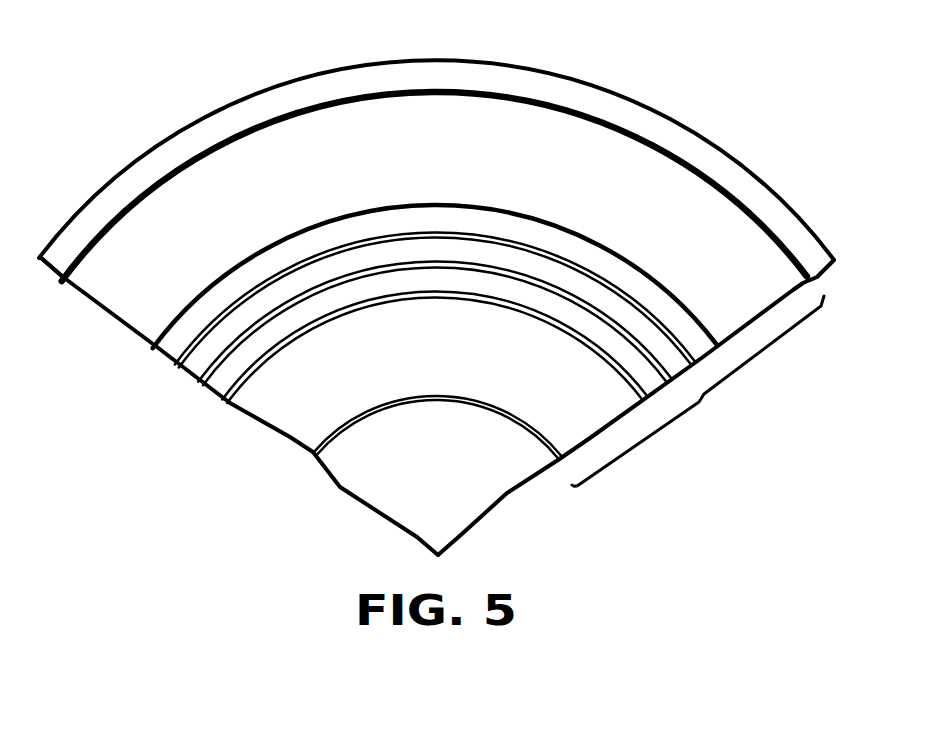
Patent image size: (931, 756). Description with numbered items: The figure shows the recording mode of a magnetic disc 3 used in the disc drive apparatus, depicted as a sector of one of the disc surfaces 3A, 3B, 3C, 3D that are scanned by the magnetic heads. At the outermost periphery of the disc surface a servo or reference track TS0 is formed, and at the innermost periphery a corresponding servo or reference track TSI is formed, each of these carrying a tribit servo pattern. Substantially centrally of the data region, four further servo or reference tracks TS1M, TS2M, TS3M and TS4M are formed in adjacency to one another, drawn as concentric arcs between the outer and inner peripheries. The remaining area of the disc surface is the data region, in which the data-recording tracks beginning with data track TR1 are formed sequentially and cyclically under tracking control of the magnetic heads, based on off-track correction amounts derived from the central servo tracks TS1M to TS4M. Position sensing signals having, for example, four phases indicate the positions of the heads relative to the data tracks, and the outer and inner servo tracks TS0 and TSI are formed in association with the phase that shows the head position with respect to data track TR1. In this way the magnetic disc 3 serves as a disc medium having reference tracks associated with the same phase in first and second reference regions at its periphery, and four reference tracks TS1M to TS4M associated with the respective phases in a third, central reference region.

The magnetic disc 3 is at (564, 68).
The disc surface 3A is at (434, 161).
The disc surface 3B is at (434, 186).
The disc surface 3C is at (434, 186).
The disc surface 3D is at (607, 113).
The servo track TS0 is at (68, 283).
The servo track TS1M is at (160, 348).
The servo track TS2M is at (184, 364).
The servo track TS3M is at (207, 388).
The servo track TS4M is at (230, 407).
The servo track TSI is at (315, 452).
The data track TR1 is at (707, 392).